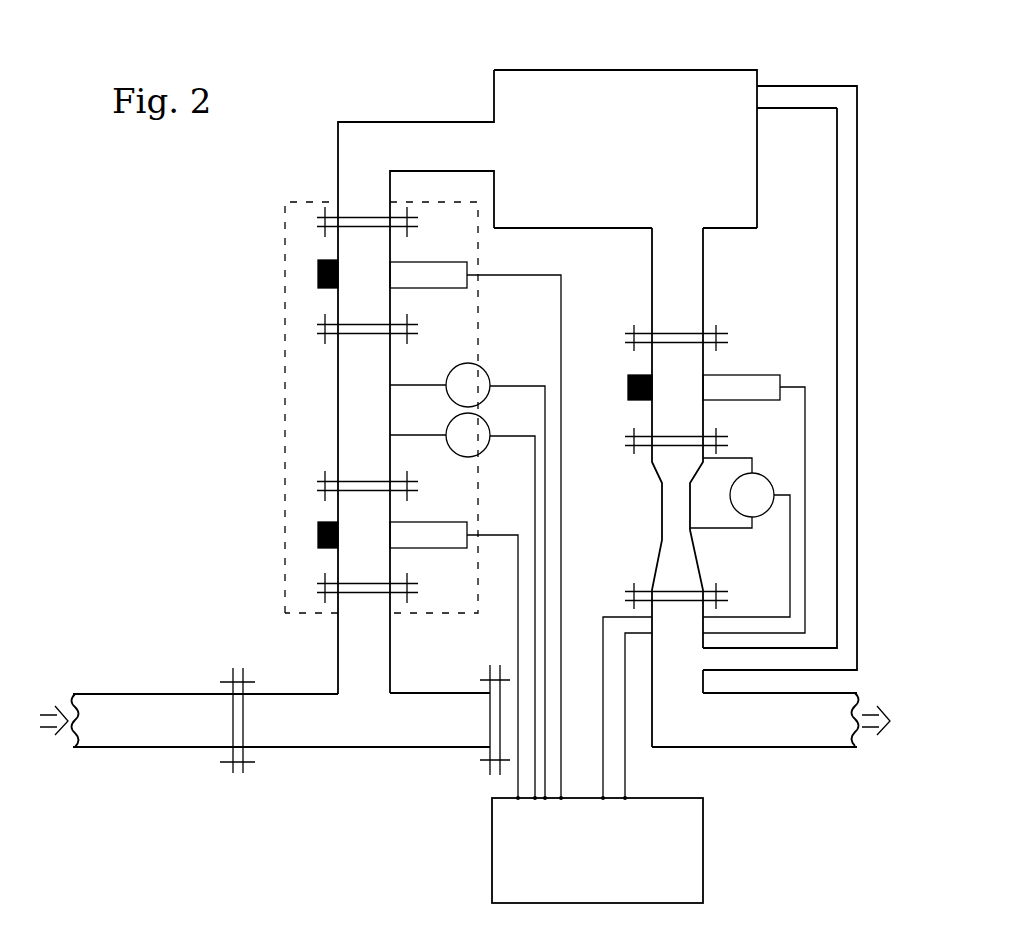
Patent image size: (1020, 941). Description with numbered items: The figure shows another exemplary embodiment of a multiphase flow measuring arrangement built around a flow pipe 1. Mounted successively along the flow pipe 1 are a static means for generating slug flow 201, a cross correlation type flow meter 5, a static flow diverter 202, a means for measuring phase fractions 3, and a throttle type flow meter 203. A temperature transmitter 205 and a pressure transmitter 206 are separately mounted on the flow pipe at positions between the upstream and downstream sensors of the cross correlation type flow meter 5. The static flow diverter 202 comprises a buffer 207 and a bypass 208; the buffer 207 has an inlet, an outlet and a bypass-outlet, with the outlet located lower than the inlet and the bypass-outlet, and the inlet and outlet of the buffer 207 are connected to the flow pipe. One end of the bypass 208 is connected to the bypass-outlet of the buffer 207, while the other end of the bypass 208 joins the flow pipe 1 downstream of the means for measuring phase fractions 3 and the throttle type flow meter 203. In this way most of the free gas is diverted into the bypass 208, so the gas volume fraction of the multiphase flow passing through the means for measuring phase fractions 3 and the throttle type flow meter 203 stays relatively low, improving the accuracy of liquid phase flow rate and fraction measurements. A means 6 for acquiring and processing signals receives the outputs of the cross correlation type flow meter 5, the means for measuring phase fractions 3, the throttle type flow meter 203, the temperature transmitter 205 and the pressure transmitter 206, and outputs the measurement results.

The flow pipe 1 is at (178, 693).
The static means for generating slug flow 201 is at (310, 693).
The cross correlation type flow meter 5 is at (287, 428).
The pressure transmitter 206 is at (492, 375).
The temperature transmitter 205 is at (535, 418).
The static flow diverter 202 is at (652, 70).
The buffer 207 is at (675, 107).
The bypass 208 is at (812, 86).
The means for measuring phase fractions 3 is at (707, 373).
The throttle type flow meter 203 is at (698, 570).
The means for acquiring and processing signals 6 is at (703, 860).